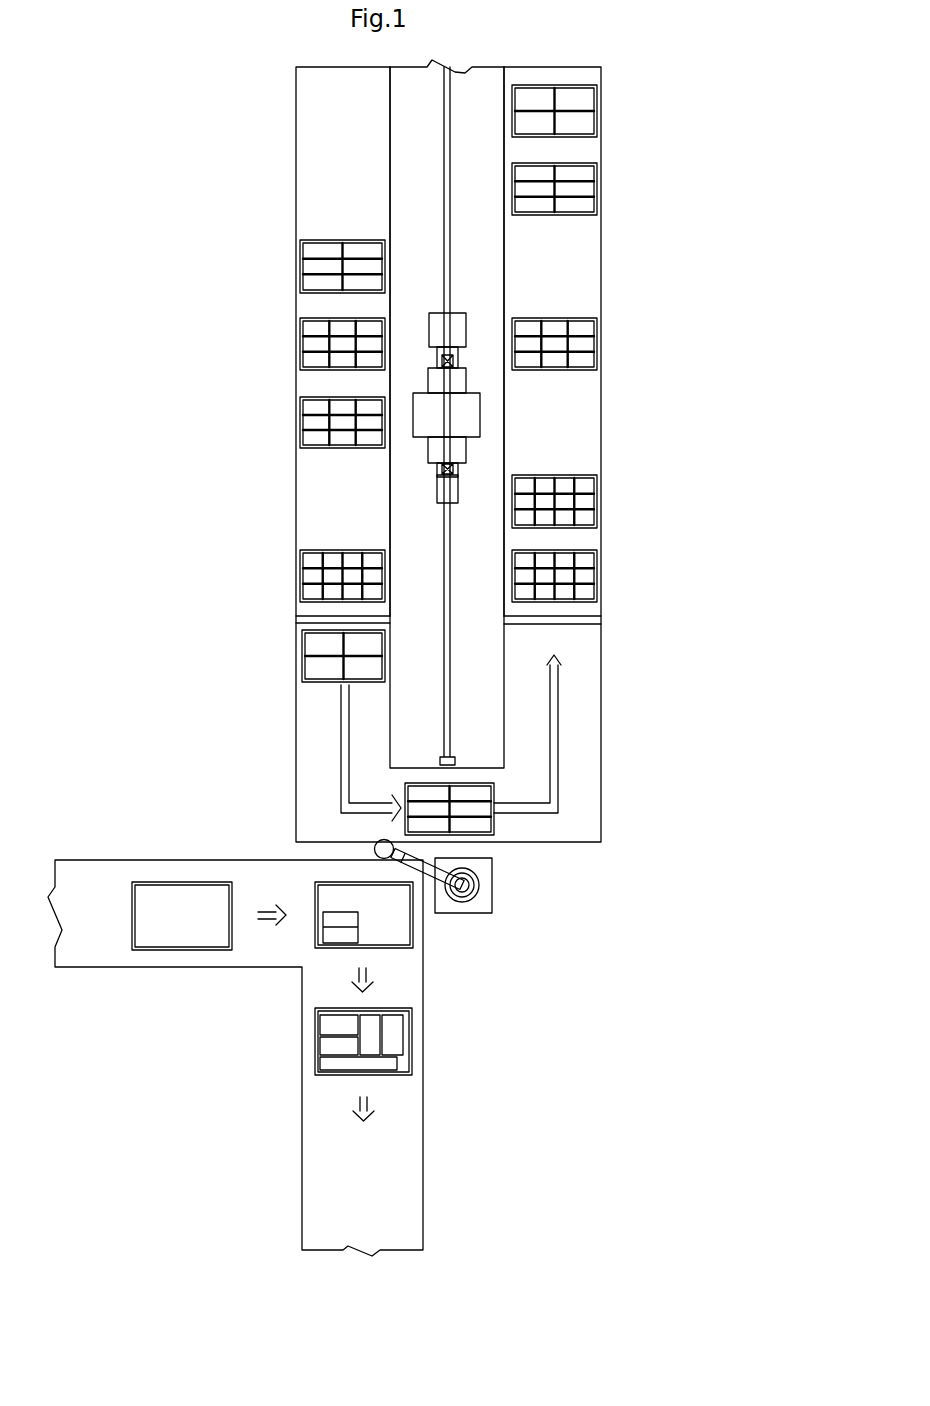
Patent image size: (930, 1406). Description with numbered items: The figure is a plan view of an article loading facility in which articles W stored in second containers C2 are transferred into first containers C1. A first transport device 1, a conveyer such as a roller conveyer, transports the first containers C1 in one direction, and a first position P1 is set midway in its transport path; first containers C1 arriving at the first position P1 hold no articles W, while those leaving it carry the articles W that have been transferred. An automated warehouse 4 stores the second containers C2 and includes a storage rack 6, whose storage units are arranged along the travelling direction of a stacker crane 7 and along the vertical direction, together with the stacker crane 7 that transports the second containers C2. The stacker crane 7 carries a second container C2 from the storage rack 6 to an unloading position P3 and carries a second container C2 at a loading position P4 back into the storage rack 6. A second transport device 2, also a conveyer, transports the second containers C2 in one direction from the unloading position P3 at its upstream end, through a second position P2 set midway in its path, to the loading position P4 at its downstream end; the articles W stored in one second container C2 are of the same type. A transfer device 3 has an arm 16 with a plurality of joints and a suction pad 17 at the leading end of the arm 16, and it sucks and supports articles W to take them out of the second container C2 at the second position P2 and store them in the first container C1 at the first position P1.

The first transport device 1 is at (424, 1183).
The second transport device 2 is at (602, 737).
The transfer device 3 is at (492, 880).
The automated warehouse 4 is at (631, 310).
The storage rack 6 is at (602, 405).
The stacker crane 7 is at (480, 423).
The arm 16 is at (425, 877).
The suction pad 17 is at (376, 845).
The first container C1 is at (165, 880).
The second container C2 is at (598, 180).
The article W is at (372, 267).
The first position P1 is at (343, 870).
The second position P2 is at (467, 761).
The unloading position P3 is at (284, 673).
The loading position P4 is at (615, 642).